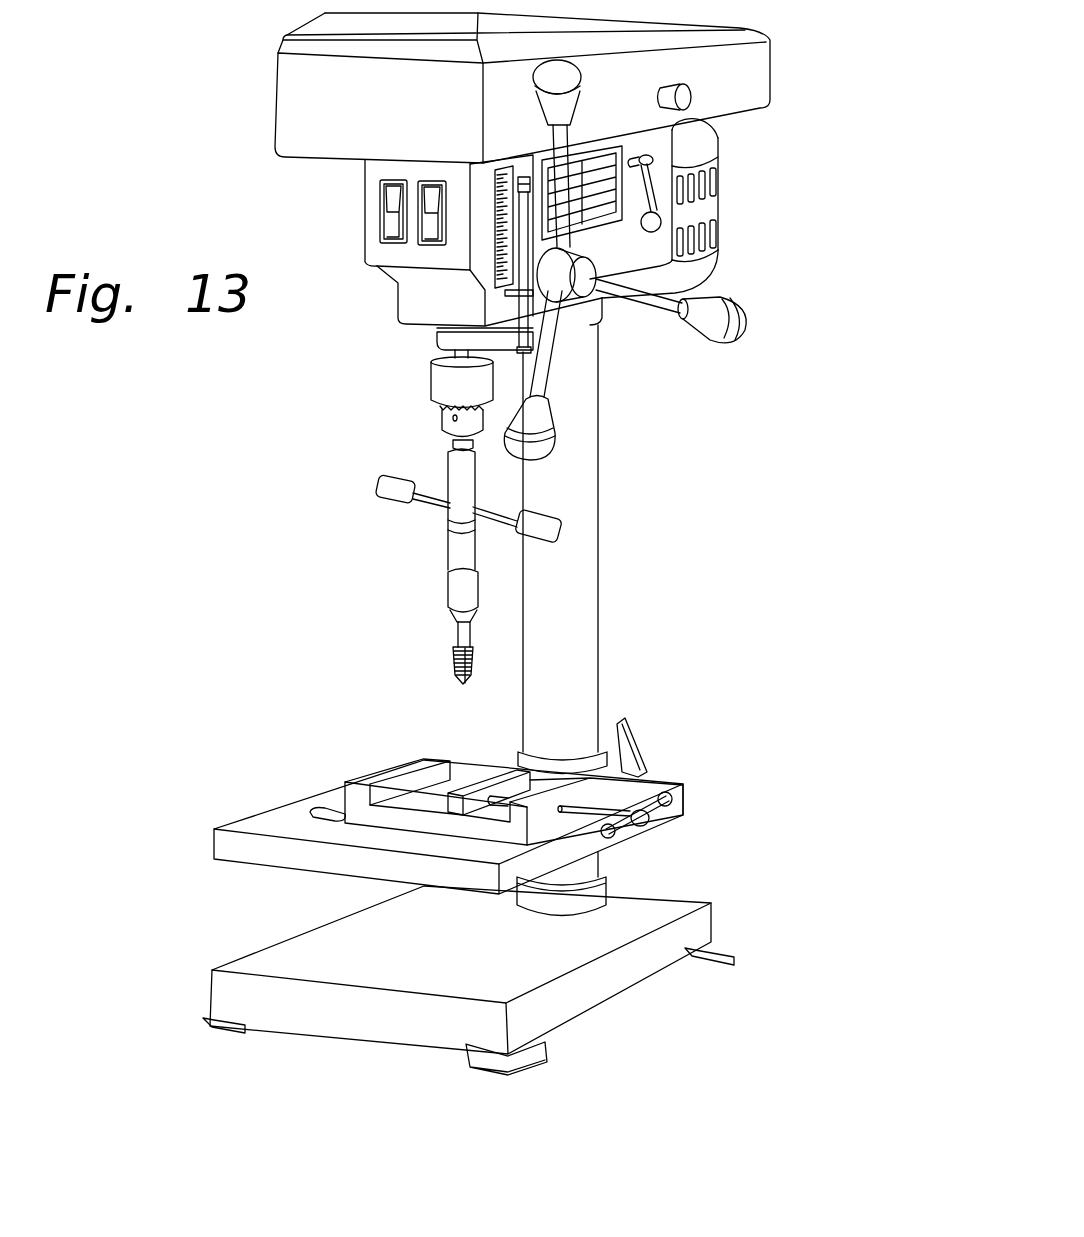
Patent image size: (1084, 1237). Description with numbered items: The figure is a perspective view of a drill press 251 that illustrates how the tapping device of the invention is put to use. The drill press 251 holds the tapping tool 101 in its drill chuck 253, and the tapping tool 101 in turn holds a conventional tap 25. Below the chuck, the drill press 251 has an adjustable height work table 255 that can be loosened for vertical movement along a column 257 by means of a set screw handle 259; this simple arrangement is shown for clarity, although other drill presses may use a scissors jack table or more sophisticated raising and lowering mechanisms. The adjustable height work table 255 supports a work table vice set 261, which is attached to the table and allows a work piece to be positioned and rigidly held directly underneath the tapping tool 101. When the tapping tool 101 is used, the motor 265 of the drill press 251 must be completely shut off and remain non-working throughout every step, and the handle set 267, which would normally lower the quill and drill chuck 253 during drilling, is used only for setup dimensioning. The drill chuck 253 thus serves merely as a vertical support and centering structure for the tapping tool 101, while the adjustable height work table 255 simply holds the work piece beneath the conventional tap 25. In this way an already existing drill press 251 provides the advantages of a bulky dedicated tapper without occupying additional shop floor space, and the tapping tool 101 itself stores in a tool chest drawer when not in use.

The conventional tap 25 is at (453, 633).
The tapping tool 101 is at (375, 418).
The drill press 251 is at (150, 843).
The drill chuck 253 is at (430, 380).
The adjustable height work table 255 is at (683, 793).
The column 257 is at (590, 677).
The set screw handle 259 is at (645, 758).
The work table vice set 261 is at (354, 794).
The motor 265 is at (713, 139).
The handle set 267 is at (737, 307).